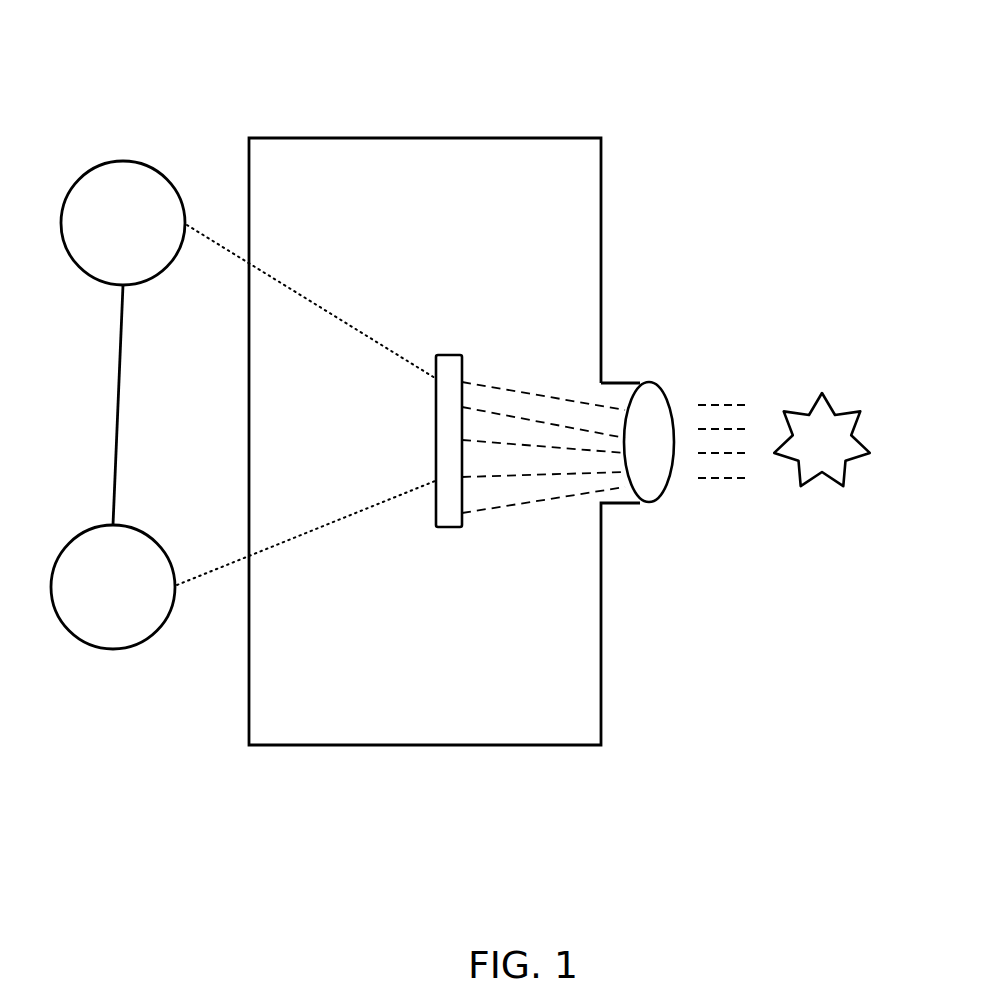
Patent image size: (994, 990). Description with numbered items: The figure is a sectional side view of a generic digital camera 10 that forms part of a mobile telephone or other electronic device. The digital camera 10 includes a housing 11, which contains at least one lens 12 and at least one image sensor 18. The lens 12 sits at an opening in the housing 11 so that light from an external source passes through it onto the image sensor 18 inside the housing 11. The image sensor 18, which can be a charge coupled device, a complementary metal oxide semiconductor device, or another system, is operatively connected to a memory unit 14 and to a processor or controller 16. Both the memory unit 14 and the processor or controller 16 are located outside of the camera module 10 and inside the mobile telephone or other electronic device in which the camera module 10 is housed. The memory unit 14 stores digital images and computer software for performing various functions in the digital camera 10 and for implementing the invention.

The digital camera 10 is at (433, 114).
The housing 11 is at (573, 247).
The lens 12 is at (655, 502).
The memory unit 14 is at (92, 168).
The processor or controller 16 is at (92, 647).
The image sensor 18 is at (448, 357).